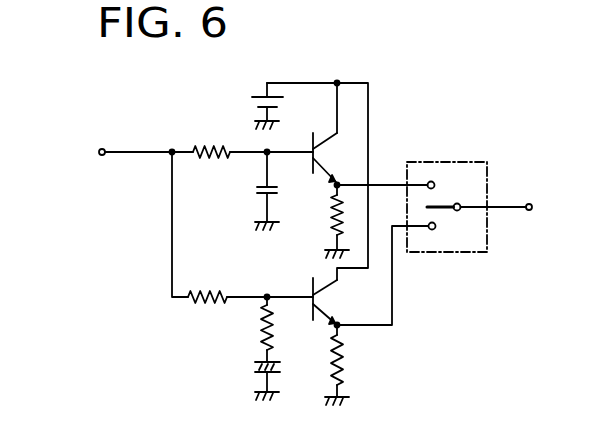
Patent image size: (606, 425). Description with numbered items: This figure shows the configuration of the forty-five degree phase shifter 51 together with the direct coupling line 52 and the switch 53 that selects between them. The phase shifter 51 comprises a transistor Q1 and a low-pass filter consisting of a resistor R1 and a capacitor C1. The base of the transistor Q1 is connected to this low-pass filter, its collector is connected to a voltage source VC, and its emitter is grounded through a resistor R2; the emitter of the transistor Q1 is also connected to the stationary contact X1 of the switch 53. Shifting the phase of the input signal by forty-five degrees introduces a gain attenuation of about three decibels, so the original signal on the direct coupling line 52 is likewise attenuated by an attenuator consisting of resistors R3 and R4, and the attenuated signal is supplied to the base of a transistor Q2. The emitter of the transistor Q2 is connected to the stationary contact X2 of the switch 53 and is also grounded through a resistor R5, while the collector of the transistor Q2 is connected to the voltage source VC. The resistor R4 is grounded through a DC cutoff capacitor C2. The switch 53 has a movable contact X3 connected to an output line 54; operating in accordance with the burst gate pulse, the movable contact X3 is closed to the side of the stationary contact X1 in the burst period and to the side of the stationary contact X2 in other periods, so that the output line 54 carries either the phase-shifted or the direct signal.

The 45° phase shifter 51 is at (246, 208).
The direct coupling line 52 is at (172, 213).
The switch 53 is at (447, 162).
The output line 54 is at (533, 207).
The resistor R1 is at (214, 142).
The resistor R2 is at (331, 211).
The resistor R3 is at (213, 287).
The resistor R4 is at (256, 332).
The resistor R5 is at (345, 360).
The capacitor C1 is at (253, 185).
The DC cutoff capacitor C2 is at (255, 364).
The voltage source VC is at (252, 101).
The transistor Q1 is at (318, 150).
The transistor Q2 is at (320, 299).
The stationary contact X1 is at (428, 181).
The stationary contact X2 is at (436, 229).
The movable contact X3 is at (462, 206).